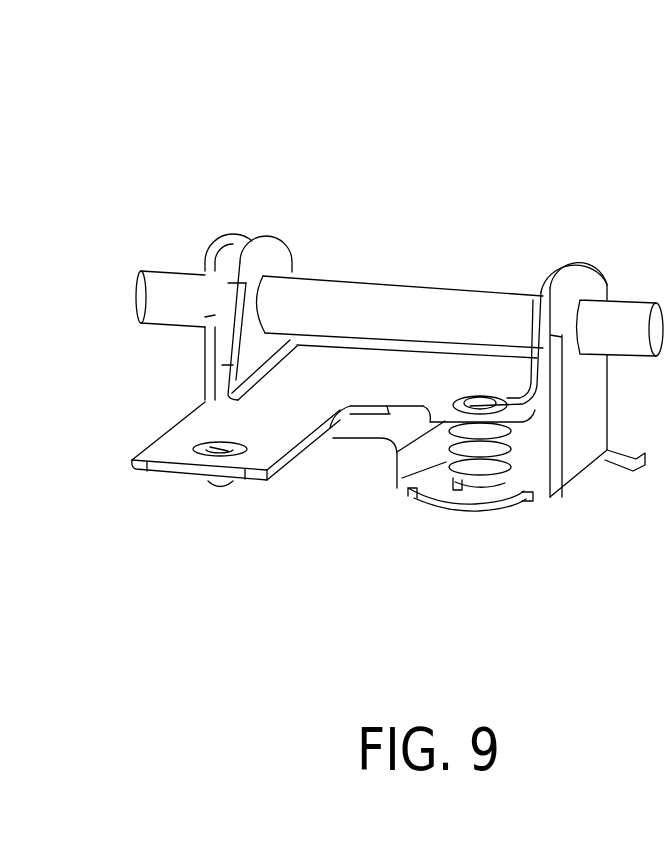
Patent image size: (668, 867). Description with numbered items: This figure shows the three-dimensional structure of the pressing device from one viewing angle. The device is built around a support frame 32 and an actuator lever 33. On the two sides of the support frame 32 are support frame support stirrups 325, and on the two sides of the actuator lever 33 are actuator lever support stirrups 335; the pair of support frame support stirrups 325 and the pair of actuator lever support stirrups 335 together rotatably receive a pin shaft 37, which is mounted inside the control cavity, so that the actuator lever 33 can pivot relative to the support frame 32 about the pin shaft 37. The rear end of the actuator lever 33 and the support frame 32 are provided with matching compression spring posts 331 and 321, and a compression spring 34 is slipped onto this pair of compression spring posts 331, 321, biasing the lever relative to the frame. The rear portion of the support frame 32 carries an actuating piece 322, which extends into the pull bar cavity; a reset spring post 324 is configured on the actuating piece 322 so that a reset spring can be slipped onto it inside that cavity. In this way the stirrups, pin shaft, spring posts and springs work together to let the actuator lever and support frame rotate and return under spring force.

The support frame 32 is at (384, 466).
The actuator lever 33 is at (422, 499).
The compression spring 34 is at (572, 542).
The pin shaft 37 is at (399, 218).
The compression spring post 321 is at (504, 494).
The actuating piece 322 is at (201, 497).
The reset spring post 324 is at (192, 517).
The support frame support stirrup 325 is at (555, 288).
The compression spring post 331 is at (443, 507).
The actuator lever support stirrup 335 is at (267, 240).